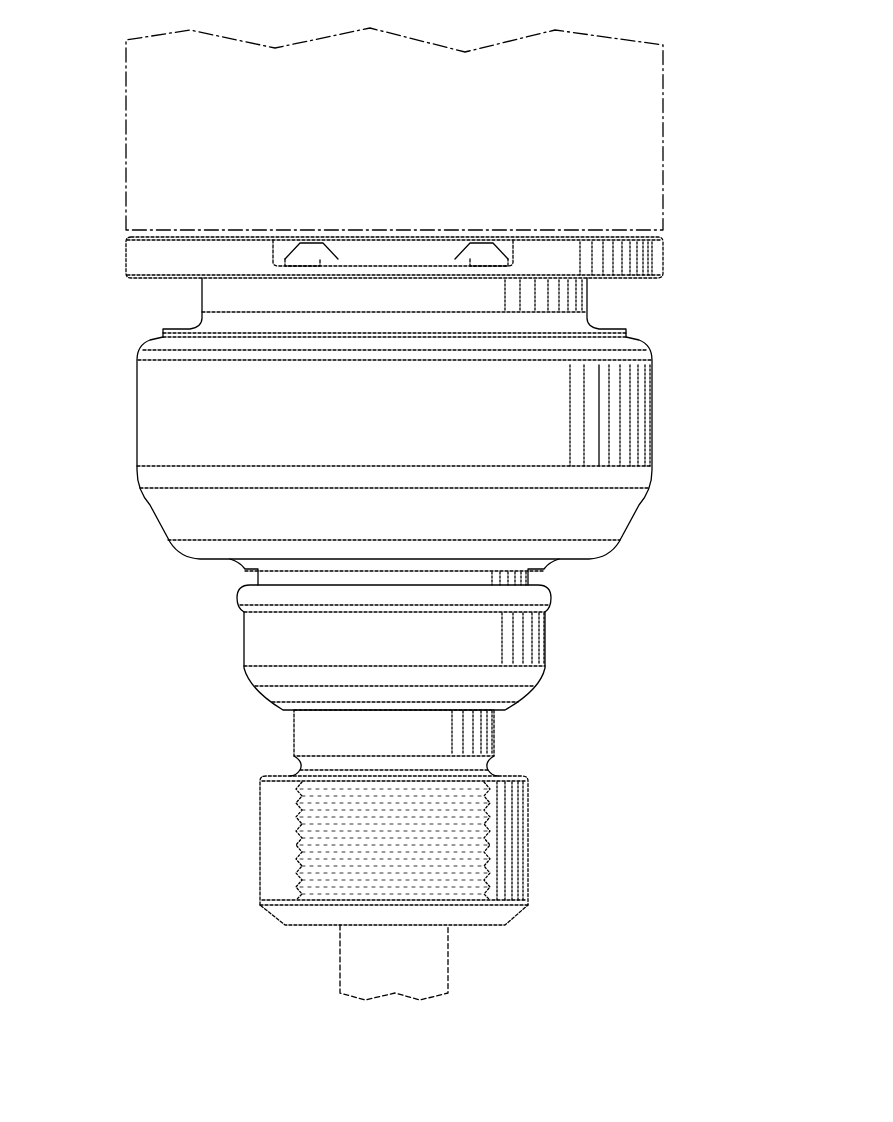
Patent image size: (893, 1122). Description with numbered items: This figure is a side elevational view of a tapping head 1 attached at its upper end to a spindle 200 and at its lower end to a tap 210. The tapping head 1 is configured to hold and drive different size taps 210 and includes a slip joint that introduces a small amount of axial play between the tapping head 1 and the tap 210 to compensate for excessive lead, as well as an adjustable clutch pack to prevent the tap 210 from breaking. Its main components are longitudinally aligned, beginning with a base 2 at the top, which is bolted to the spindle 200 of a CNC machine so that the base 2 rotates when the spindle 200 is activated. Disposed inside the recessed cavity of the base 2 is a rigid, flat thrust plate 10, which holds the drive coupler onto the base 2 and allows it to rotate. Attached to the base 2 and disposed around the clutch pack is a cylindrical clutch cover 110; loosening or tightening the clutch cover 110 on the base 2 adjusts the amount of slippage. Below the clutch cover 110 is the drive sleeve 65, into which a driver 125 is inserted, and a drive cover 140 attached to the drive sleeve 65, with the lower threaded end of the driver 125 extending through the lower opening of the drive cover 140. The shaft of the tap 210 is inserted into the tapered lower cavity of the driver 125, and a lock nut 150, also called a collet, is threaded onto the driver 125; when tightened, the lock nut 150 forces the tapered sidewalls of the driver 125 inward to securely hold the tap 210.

The tapping head 1 is at (112, 58).
The base 2 is at (125, 408).
The thrust plate 10 is at (385, 246).
The drive sleeve 65 is at (532, 578).
The clutch cover 110 is at (660, 390).
The driver 125 is at (497, 720).
The drive cover 140 is at (548, 633).
The lock nut 150 is at (530, 826).
The spindle 200 is at (672, 122).
The tap 210 is at (452, 950).